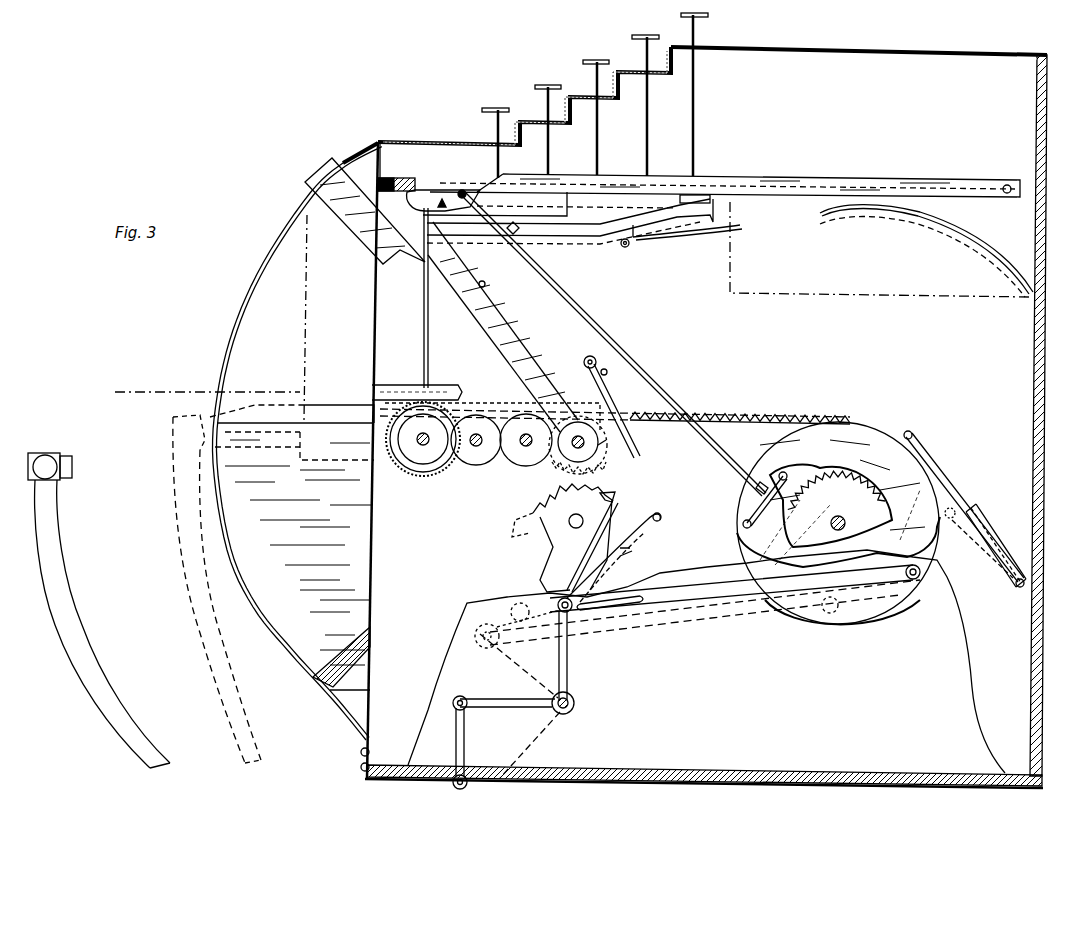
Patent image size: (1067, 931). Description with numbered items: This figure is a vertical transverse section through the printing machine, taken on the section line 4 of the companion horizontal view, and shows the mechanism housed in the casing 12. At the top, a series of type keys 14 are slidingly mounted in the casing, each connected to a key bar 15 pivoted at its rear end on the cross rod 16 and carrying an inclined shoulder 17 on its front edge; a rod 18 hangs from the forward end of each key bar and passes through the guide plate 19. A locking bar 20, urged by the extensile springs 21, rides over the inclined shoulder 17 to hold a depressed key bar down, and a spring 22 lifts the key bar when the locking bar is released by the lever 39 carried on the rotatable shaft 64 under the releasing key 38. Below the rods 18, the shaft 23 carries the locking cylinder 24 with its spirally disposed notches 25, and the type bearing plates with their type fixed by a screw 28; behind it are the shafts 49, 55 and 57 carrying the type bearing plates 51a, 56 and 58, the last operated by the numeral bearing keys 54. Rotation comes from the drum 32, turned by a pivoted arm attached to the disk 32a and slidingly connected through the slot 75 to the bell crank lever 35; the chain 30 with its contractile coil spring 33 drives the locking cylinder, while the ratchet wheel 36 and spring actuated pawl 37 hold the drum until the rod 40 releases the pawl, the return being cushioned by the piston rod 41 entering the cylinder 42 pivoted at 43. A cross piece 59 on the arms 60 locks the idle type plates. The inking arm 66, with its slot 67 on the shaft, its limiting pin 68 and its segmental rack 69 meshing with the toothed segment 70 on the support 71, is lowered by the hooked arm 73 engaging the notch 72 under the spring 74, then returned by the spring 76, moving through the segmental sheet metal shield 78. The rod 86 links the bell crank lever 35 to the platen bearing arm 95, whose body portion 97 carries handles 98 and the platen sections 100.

The section line 4— 4 is at (189, 573).
The casing 12 is at (1031, 372).
The type keys 14 is at (550, 87).
The key bar 15 is at (825, 180).
The cross rod 16 is at (1007, 185).
The inclined shoulder 17 is at (412, 178).
The rod 18 is at (427, 333).
The guide plate 19 is at (440, 386).
The locking bar 20 is at (396, 178).
The extensile springs 21 is at (380, 198).
The spring 22 is at (962, 224).
The shaft 23 is at (423, 446).
The locking cylinder 24 is at (440, 460).
The notches 25 is at (385, 418).
The screw 28 is at (410, 455).
The chain 30 is at (773, 416).
The drum 32 is at (838, 523).
The disk 32a is at (890, 600).
The contractile coil spring 33 is at (707, 416).
The bell crank lever 35 is at (570, 663).
The ratchet wheel 36 is at (831, 506).
The spring actuated pawl 37 is at (845, 517).
The releasing key 38 is at (497, 108).
The lever 39 is at (462, 190).
The rod 40 is at (571, 310).
The piston rod 41 is at (952, 497).
The cylinder 42 is at (992, 537).
The pivot 43 is at (1017, 587).
The shaft 49 is at (476, 447).
The type bearing plates 51a is at (350, 692).
The numeral bearing keys 54 is at (708, 598).
The shaft 55 is at (528, 434).
The type bearing plates 56 is at (341, 657).
The shaft 57 is at (579, 436).
The type bearing plates 58 is at (292, 535).
The cross piece 59 is at (700, 195).
The arms 60 is at (578, 241).
The rotatable shaft 64 is at (441, 199).
The arm 66 is at (503, 327).
The slot 67 is at (630, 457).
The pin 68 is at (486, 283).
The segmental rack 69 is at (550, 467).
The toothed segment 70 is at (612, 493).
The support 71 is at (570, 524).
The notch 72 is at (620, 500).
The hooked arm 73 is at (880, 261).
The spring 74 is at (633, 527).
The slot 75 is at (626, 612).
The spring 76 is at (612, 400).
The segmental sheet metal shield 78 is at (248, 281).
The rod 86 is at (468, 726).
The platen bearing arm 95 is at (57, 530).
The body portion 97 is at (65, 454).
The handles 98 is at (33, 470).
The platen section 100 is at (73, 466).